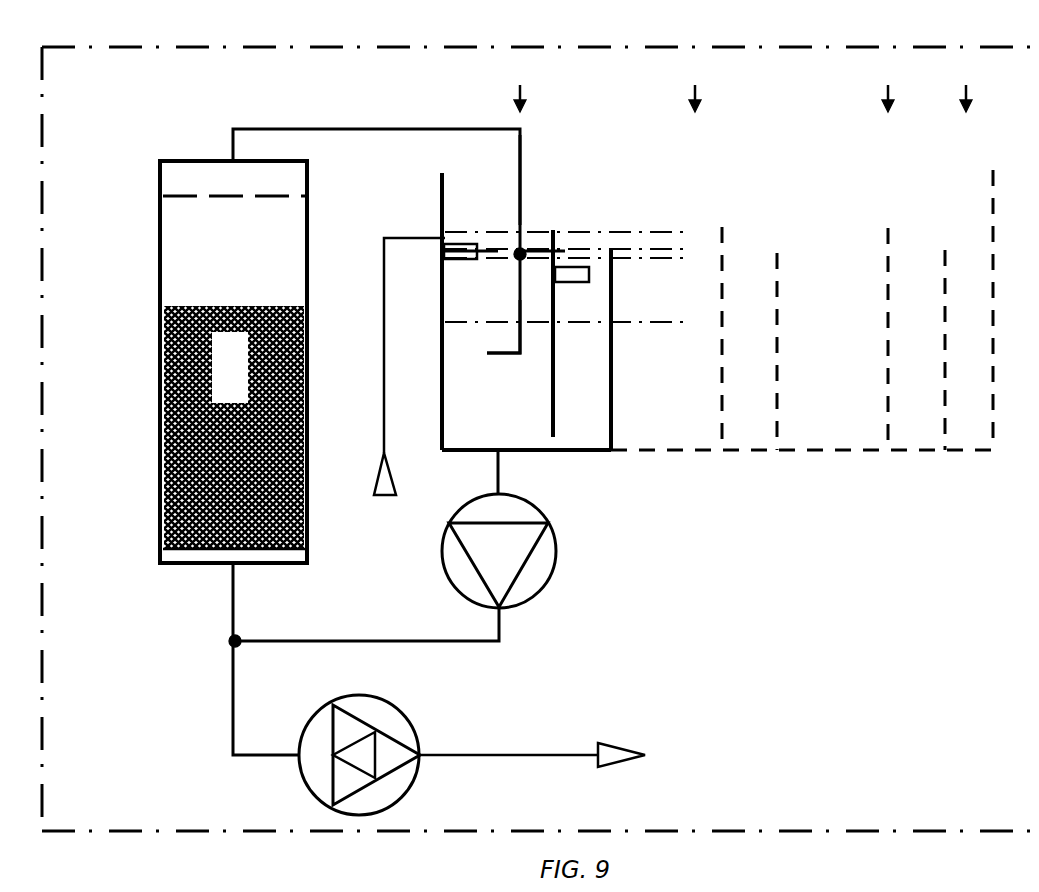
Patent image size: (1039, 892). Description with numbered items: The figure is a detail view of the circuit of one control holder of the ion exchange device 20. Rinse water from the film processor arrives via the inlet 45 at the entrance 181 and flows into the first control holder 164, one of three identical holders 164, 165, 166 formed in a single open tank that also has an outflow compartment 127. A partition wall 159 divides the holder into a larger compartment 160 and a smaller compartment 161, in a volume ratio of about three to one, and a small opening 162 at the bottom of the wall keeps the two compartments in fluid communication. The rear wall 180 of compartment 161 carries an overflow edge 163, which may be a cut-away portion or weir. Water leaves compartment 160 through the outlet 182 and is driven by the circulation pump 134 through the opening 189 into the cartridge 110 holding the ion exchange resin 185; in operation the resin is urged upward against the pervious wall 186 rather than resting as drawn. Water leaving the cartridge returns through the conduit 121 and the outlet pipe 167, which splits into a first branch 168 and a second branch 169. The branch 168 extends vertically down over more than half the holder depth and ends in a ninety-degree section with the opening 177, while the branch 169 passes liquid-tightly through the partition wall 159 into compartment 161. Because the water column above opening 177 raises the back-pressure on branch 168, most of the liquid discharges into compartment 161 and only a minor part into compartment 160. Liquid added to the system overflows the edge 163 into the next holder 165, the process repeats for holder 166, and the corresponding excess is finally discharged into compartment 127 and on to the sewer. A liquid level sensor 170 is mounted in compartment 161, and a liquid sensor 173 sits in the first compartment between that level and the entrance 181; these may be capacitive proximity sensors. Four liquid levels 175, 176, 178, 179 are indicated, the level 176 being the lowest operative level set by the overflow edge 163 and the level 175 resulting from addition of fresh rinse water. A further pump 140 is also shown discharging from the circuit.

The ion exchange device 20 is at (456, 52).
The resin holder 110 is at (160, 275).
The pervious wall 186 is at (160, 200).
The ion exchange resin 185 is at (160, 412).
The opening 189 is at (232, 568).
The conduit 121 is at (322, 129).
The outlet pipe 167 is at (524, 168).
The opening 177 is at (487, 349).
The control holder 164 is at (517, 83).
The control holder 165 is at (724, 252).
The control holder 166 is at (883, 252).
The outflow compartment 127 is at (802, 252).
The entrance 181 is at (440, 237).
The opening 162 is at (548, 452).
The rear wall 180 is at (613, 412).
The overflow edge 163 is at (613, 246).
The partition wall 159 is at (553, 380).
The liquid sensor 173 is at (445, 250).
The second branch 169 is at (522, 250).
The liquid level sensor 170 is at (590, 282).
The first branch 168 is at (520, 290).
The inlet 45 is at (381, 475).
The liquid level 175 is at (676, 232).
The liquid level 176 is at (688, 250).
The liquid level 178 is at (683, 258).
The liquid level 179 is at (683, 322).
The larger compartment 160 is at (505, 406).
The smaller compartment 161 is at (586, 406).
The outlet 182 is at (490, 456).
The circulation pump 134 is at (545, 563).
The discharge pump 140 is at (395, 722).